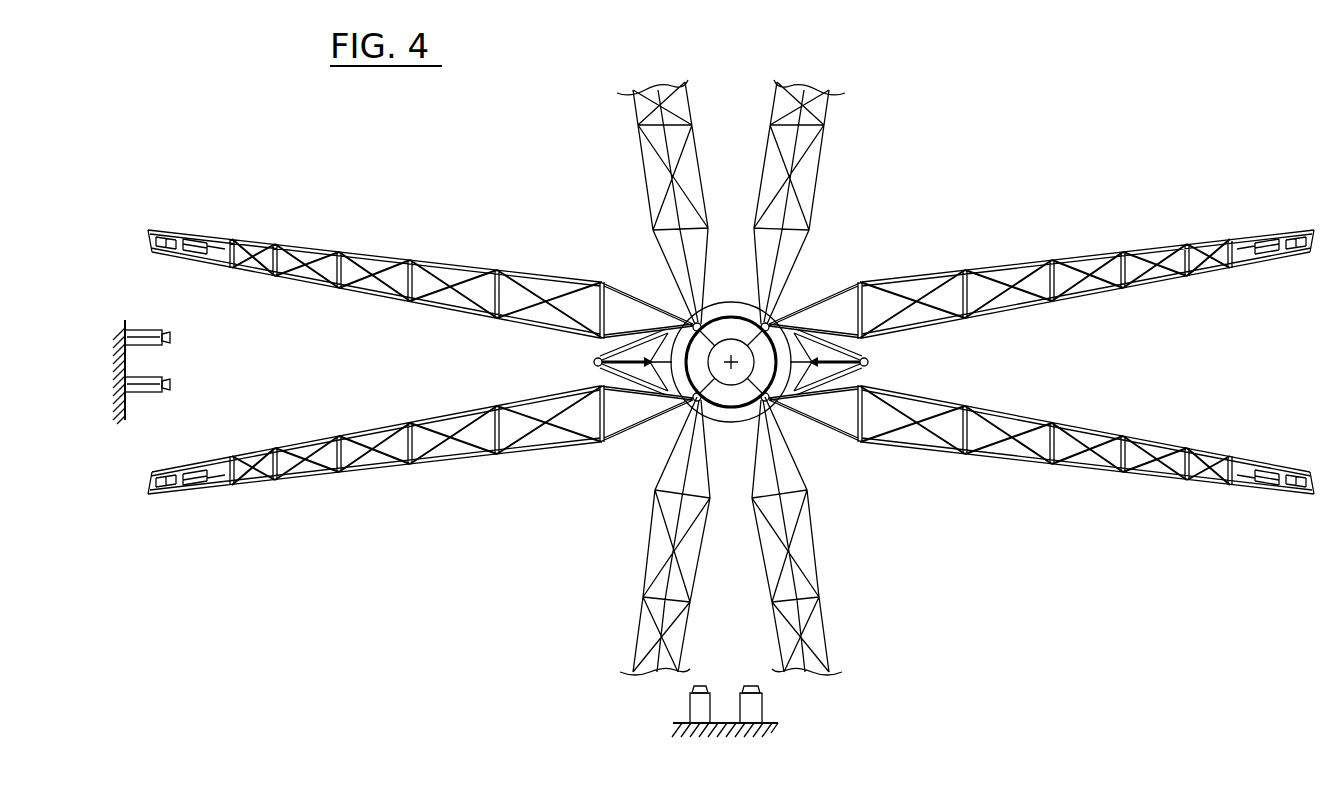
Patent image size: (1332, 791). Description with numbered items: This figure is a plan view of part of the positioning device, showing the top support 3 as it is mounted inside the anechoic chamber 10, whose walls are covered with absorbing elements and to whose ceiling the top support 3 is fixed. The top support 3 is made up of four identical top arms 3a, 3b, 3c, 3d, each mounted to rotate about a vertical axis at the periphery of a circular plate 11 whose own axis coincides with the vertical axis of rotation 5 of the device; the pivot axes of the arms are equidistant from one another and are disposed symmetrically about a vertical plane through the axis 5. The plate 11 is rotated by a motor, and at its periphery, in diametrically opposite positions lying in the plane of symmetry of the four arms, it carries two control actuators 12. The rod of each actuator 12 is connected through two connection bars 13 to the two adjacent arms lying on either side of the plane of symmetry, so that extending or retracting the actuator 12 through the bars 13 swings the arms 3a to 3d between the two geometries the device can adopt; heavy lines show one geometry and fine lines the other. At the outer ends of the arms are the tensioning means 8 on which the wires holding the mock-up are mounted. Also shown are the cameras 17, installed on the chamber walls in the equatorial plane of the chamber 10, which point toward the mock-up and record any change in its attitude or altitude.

The top support 3 is at (1150, 206).
The top arm 3a is at (640, 174).
The top arm 3b is at (826, 176).
The top arm 3c is at (1095, 480).
The top arm 3d is at (432, 482).
The vertical axis 5 is at (731, 358).
The tensioning means 8 is at (175, 226).
The anechoic chamber 10 is at (125, 405).
The circular plate 11 is at (740, 412).
The control actuator 12 is at (667, 352).
The connection bar 13 is at (870, 362).
The camera 17 is at (170, 337).